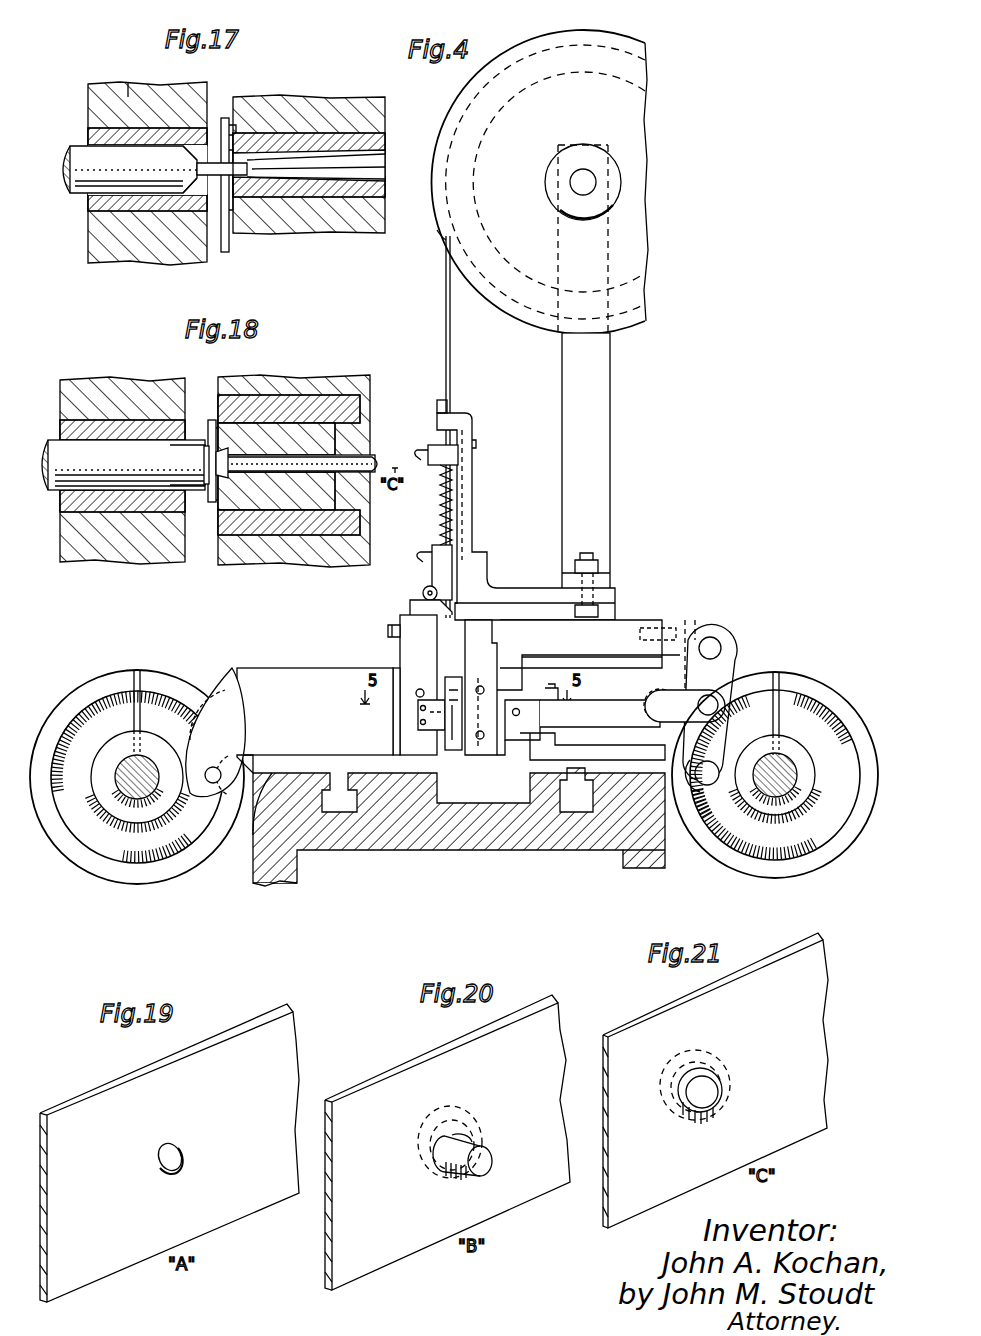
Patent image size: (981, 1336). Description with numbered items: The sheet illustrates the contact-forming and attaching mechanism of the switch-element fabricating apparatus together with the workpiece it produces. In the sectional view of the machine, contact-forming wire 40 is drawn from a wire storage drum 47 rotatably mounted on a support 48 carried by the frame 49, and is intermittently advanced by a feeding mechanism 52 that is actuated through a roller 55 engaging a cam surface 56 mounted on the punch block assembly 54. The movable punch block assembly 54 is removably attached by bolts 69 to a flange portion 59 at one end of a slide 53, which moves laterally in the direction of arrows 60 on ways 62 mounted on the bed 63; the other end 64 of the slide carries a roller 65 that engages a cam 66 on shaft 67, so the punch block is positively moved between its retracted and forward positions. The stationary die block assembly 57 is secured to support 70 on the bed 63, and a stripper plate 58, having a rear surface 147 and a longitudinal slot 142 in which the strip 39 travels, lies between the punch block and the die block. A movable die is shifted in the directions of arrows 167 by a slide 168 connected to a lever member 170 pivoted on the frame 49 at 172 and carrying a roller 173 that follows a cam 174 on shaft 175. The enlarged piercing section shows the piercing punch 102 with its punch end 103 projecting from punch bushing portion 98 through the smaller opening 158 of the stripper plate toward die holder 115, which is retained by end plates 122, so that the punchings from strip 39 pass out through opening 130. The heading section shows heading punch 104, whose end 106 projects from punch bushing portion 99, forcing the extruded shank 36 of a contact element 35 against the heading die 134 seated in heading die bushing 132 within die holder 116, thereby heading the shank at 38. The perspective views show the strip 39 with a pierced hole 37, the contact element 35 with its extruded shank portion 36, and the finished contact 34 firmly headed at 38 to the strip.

In FIG. 21, the contact 34 is at (685, 1128).
In FIG. 18, the contact element 35 is at (206, 446).
In FIG. 20, the contact element 35 is at (430, 1153).
In FIG. 21, the contact element 35 is at (672, 1110).
In FIG. 20, the shank portion 36 is at (470, 1150).
In FIG. 19, the hole 37 is at (176, 1146).
In FIG. 20, the hole 37 is at (458, 1126).
In FIG. 18, the headed portion 38 is at (255, 442).
In FIG. 21, the headed portion 38 is at (712, 1090).
In FIG. 17, the strip 39 is at (225, 120).
In FIG. 18, the strip 39 is at (208, 502).
In FIG. 19, the strip 39 is at (70, 1102).
In FIG. 20, the strip 39 is at (361, 1085).
In FIG. 21, the strip 39 is at (812, 1013).
In FIG. 4, the contact-forming wire 40 is at (452, 347).
In FIG. 4, the wire storage drum 47 is at (630, 245).
In FIG. 4, the support 48 is at (600, 455).
In FIG. 4, the frame 49 is at (628, 628).
In FIG. 4, the feeding mechanism 52 is at (478, 470).
In FIG. 4, the slide 53 is at (260, 682).
In FIG. 4, the punch block assembly 54 is at (420, 632).
In FIG. 4, the roller 55 is at (425, 590).
In FIG. 4, the cam surface 56 is at (407, 607).
In FIG. 18, the stationary die block assembly 57 is at (348, 372).
In FIG. 4, the stationary die block assembly 57 is at (492, 645).
In FIG. 17, the stripper plate 58 is at (129, 100).
In FIG. 18, the stripper plate 58 is at (88, 565).
In FIG. 4, the stripper plate 58 is at (450, 748).
In FIG. 4, the flange portion 59 is at (400, 727).
In FIG. 4, the arrows 60 is at (337, 729).
In FIG. 4, the ways 62 is at (262, 825).
In FIG. 4, the bed 63 is at (388, 845).
In FIG. 4, the other end of slide 64 is at (200, 740).
In FIG. 4, the roller 65 is at (196, 792).
In FIG. 4, the cam 66 is at (95, 828).
In FIG. 4, the shaft 67 is at (128, 772).
In FIG. 4, the bolts 69 is at (386, 632).
In FIG. 4, the support 70 is at (553, 765).
In FIG. 17, the punch bushing extension portion 98 is at (105, 200).
In FIG. 18, the punch bushing extension portion 99 is at (83, 430).
In FIG. 17, the piercing punch 102 is at (100, 160).
In FIG. 17, the punch end 103 is at (223, 232).
In FIG. 18, the heading punch 104 is at (62, 453).
In FIG. 18, the heading punch end 106 is at (190, 462).
In FIG. 17, the die holder 115 is at (338, 108).
In FIG. 18, the die holder 116 is at (325, 540).
In FIG. 17, the end plates 122 is at (362, 140).
In FIG. 17, the opening 130 is at (365, 170).
In FIG. 18, the heading die bushing 132 is at (345, 432).
In FIG. 18, the heading die 134 is at (355, 462).
In FIG. 17, the slot 142 is at (236, 228).
In FIG. 18, the slot 142 is at (214, 548).
In FIG. 18, the rear surface 147 is at (80, 535).
In FIG. 17, the smaller opening 158 is at (195, 172).
In FIG. 4, the arrows 167 is at (632, 716).
In FIG. 4, the slide 168 is at (634, 722).
In FIG. 4, the lever member 170 is at (728, 672).
In FIG. 4, the pivot 172 is at (712, 645).
In FIG. 4, the roller 173 is at (715, 790).
In FIG. 4, the cam 174 is at (790, 697).
In FIG. 4, the shaft 175 is at (786, 770).